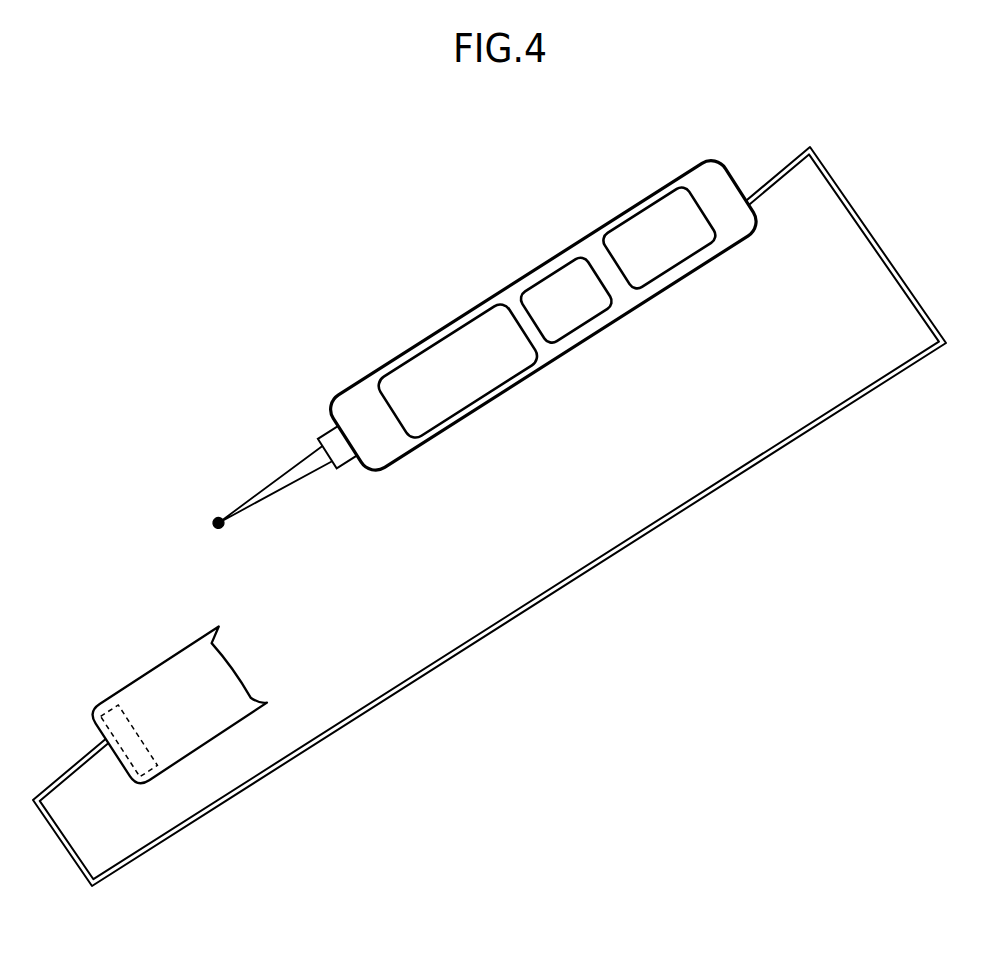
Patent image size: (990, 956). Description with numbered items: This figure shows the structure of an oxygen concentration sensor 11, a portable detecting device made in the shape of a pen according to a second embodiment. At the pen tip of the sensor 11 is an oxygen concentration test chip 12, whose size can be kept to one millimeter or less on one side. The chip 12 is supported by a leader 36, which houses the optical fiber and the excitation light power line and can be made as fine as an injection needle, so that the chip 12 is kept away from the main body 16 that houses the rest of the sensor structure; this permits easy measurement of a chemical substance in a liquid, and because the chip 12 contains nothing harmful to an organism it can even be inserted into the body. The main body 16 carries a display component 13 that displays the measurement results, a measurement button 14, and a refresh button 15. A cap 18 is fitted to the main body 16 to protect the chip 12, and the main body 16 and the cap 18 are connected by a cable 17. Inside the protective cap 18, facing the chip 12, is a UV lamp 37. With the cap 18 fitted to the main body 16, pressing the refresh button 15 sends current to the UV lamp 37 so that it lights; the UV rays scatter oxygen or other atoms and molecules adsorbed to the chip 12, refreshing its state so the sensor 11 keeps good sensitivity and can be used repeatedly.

The oxygen concentration sensor 11 is at (466, 326).
The oxygen concentration test chip 12 is at (219, 517).
The display component 13 is at (448, 348).
The measurement button 14 is at (555, 282).
The refresh button 15 is at (645, 232).
The main body 16 is at (697, 168).
The cable 17 is at (794, 444).
The cap 18 is at (146, 679).
The leader 36 is at (294, 466).
The UV lamp 37 is at (108, 717).